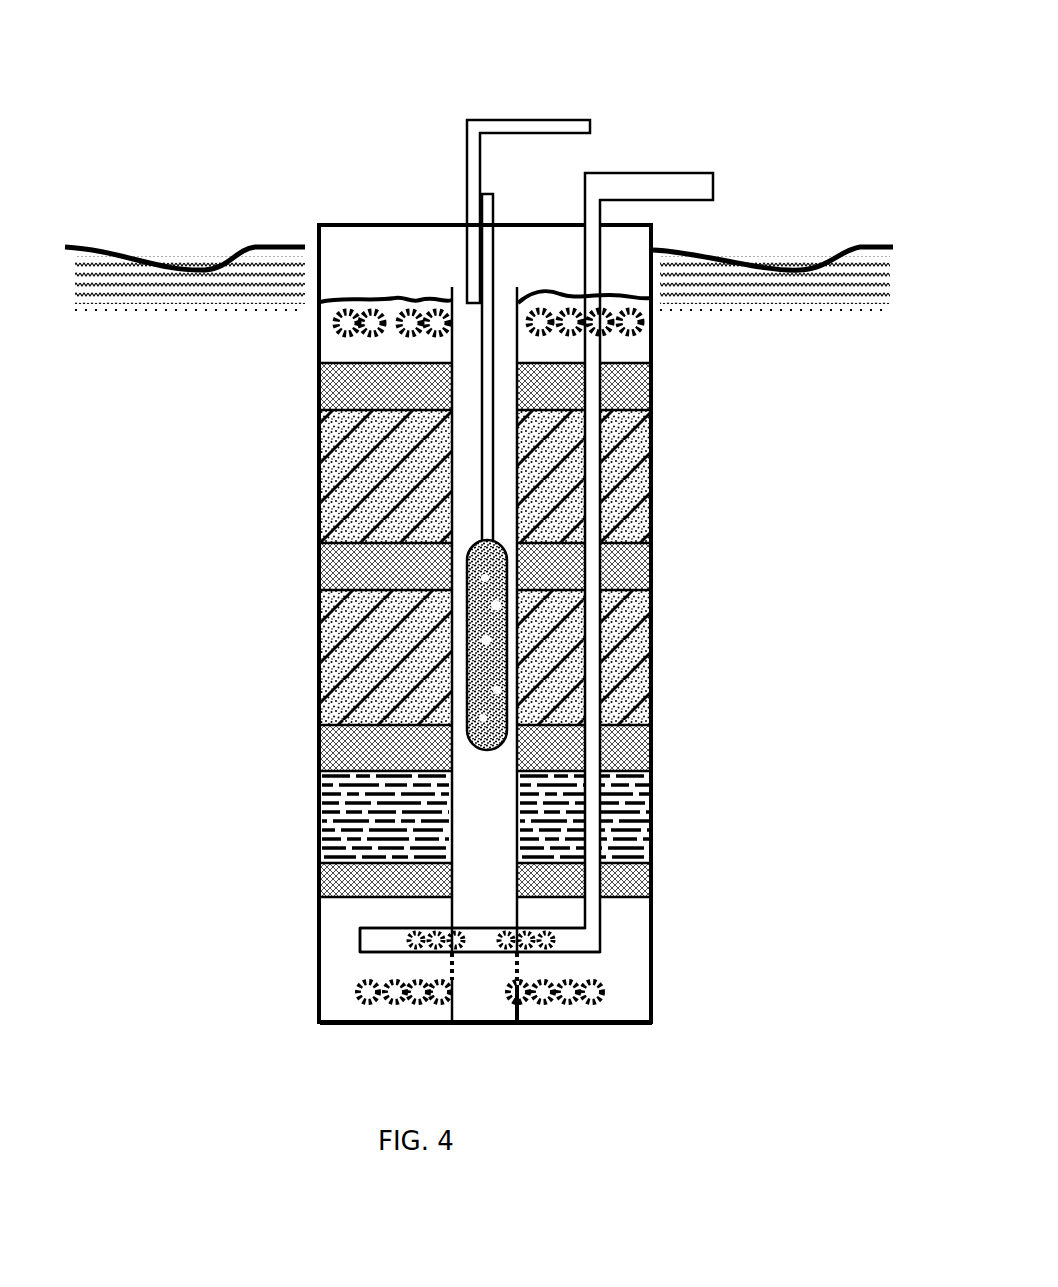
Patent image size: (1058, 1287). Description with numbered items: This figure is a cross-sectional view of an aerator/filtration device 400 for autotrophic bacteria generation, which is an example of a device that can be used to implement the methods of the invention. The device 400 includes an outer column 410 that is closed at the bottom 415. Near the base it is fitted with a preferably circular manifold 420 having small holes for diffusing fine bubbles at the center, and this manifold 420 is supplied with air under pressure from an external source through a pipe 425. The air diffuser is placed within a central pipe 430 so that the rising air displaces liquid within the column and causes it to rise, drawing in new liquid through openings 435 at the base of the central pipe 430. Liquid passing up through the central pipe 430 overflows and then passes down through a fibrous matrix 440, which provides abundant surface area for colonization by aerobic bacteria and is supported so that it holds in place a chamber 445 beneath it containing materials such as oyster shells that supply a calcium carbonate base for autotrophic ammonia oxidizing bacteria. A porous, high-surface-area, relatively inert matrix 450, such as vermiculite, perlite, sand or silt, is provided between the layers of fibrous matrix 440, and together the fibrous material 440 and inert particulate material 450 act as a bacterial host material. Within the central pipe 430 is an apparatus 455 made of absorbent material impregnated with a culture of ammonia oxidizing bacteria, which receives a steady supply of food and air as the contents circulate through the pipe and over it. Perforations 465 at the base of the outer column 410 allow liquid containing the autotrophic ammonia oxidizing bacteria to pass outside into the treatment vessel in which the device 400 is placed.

The aerator/filtration device 400 is at (322, 188).
The outer column 410 is at (668, 400).
The bottom 415 is at (602, 1038).
The manifold 420 is at (350, 941).
The pipe 425 is at (670, 165).
The central pipe 430 is at (492, 828).
The openings 435 is at (453, 977).
The fibrous matrix 440 is at (308, 383).
The chamber 445 is at (665, 823).
The inert matrix 450 is at (667, 468).
The apparatus 455 is at (468, 648).
The perforations 465 is at (623, 988).